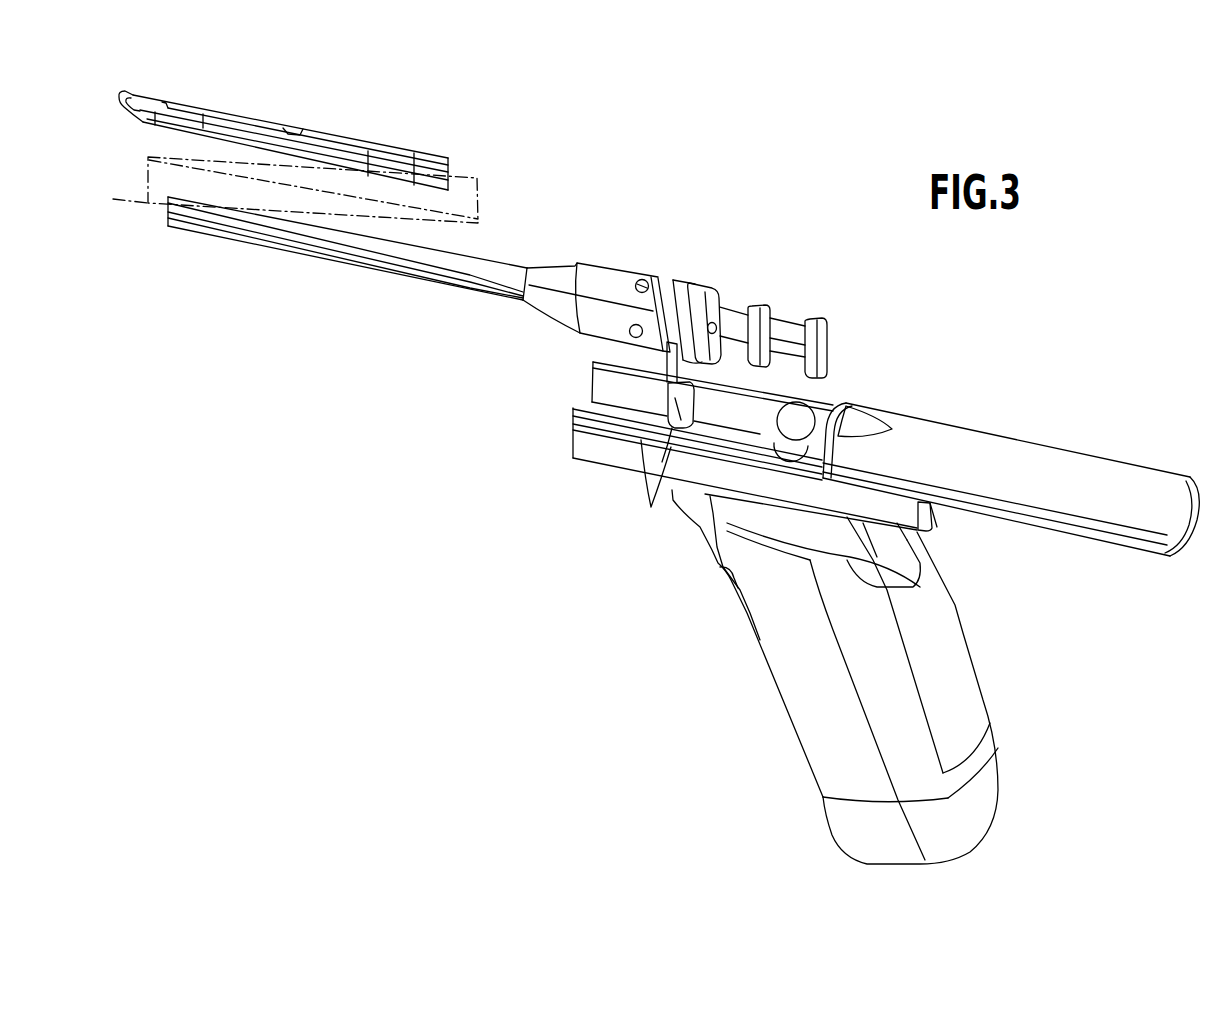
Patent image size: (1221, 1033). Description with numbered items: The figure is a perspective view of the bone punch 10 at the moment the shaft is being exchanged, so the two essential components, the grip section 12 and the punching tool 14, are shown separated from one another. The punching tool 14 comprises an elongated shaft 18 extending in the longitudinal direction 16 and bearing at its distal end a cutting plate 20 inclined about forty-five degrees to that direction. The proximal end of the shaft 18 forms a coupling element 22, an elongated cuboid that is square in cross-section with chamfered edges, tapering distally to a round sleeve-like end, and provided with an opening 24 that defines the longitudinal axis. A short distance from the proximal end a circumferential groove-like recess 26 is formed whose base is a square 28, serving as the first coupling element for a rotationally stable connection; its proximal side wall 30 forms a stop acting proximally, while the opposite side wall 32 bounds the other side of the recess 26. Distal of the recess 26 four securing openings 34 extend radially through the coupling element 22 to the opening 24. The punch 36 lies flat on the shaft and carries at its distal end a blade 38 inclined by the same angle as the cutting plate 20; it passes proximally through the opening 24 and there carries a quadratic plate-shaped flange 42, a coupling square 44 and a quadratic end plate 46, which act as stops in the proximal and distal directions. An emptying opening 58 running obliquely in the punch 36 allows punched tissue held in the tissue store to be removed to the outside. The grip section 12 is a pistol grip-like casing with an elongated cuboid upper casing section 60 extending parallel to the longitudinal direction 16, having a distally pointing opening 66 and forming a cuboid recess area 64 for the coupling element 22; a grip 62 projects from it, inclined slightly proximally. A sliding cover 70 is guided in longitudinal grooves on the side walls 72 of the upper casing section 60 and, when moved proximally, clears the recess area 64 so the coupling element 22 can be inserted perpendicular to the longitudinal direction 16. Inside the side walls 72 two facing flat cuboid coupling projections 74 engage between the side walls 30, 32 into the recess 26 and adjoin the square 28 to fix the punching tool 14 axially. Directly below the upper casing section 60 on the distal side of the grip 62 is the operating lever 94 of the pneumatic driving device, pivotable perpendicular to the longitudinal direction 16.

The bone punch 10 is at (702, 163).
The grip section 12 is at (778, 686).
The punching tool 14 is at (480, 256).
The longitudinal direction 16 is at (120, 212).
The elongated shaft 18 is at (345, 262).
The cutting plate 20 is at (128, 92).
The coupling element 22 is at (598, 268).
The opening 24 is at (712, 336).
The groove-like recess 26 is at (688, 270).
The square 28 is at (688, 295).
The side wall 30 is at (668, 362).
The side wall 32 is at (673, 280).
The securing openings 34 is at (635, 278).
The punch 36 is at (376, 150).
The blade 38 is at (168, 100).
The flange 42 is at (765, 308).
The coupling square 44 is at (795, 330).
The end plate 46 is at (826, 350).
The emptying opening 58 is at (298, 127).
The upper casing section 60 is at (838, 403).
The grip 62 is at (970, 641).
The recess area 64 is at (598, 402).
The opening 66 is at (590, 369).
The sliding cover 70 is at (1101, 465).
The side walls 72 is at (762, 424).
The coupling projections 74 is at (653, 490).
The operating lever 94 is at (727, 578).